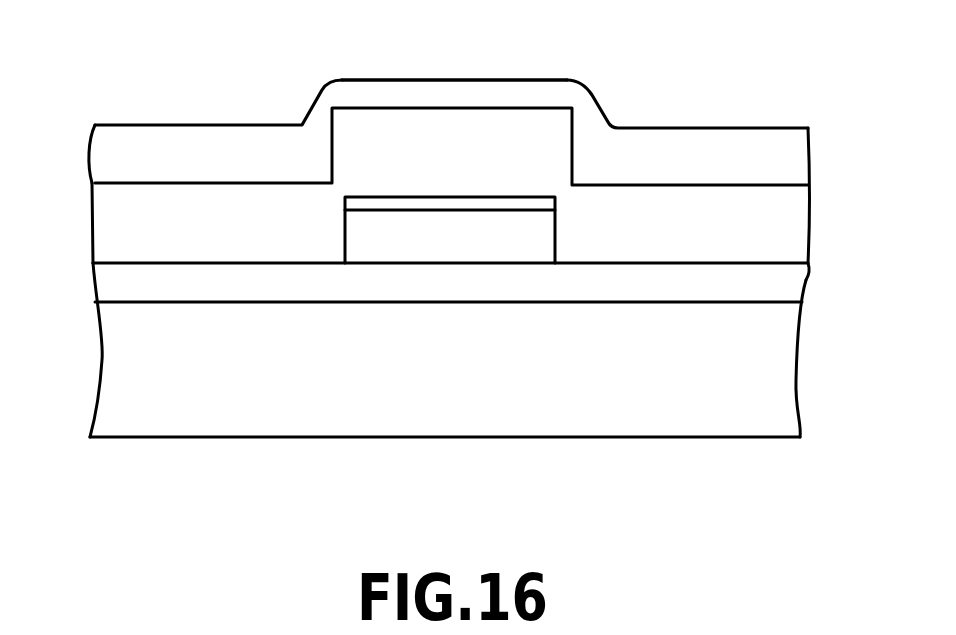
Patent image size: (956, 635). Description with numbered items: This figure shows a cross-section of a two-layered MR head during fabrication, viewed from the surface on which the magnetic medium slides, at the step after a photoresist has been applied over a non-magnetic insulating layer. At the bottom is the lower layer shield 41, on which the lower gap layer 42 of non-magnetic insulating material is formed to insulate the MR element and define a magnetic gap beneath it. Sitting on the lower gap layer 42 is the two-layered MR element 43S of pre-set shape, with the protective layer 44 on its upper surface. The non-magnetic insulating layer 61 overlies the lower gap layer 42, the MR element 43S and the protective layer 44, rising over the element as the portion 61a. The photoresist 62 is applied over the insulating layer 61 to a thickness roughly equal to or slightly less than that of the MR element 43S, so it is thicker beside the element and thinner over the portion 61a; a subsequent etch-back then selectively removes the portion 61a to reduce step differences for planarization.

The lower layer shield 41 is at (387, 397).
The lower gap layer 42 is at (563, 288).
The two-layered MR element 43S is at (523, 230).
The protective layer 44 is at (373, 203).
The non-magnetic insulating layer 61 is at (698, 220).
The non-insulating layer portion on the MR element 61a is at (443, 158).
The photoresist 62 is at (202, 157).